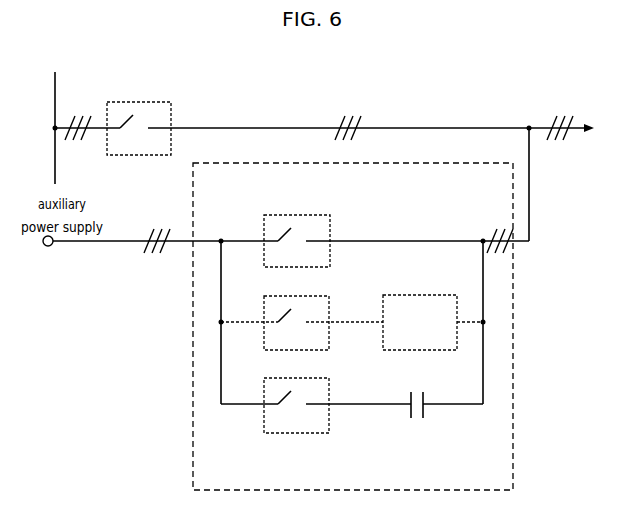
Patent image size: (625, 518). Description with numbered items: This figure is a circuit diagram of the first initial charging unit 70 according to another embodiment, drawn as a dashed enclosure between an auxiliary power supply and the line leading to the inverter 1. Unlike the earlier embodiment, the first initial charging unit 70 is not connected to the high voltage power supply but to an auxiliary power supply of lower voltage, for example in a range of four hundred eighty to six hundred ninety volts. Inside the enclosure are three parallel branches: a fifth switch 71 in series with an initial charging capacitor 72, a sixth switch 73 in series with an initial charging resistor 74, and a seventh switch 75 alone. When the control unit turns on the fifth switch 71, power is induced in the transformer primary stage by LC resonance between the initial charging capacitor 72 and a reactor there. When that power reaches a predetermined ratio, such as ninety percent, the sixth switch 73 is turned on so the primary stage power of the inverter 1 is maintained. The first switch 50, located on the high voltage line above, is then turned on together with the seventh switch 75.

The inverter 1 is at (331, 128).
The first switch 50 is at (138, 101).
The first initial charging unit 70 is at (380, 326).
The fifth switch 71 is at (331, 386).
The initial charging capacitor 72 is at (427, 396).
The sixth switch 73 is at (331, 305).
The initial charging resistor 74 is at (418, 294).
The seventh switch 75 is at (297, 214).